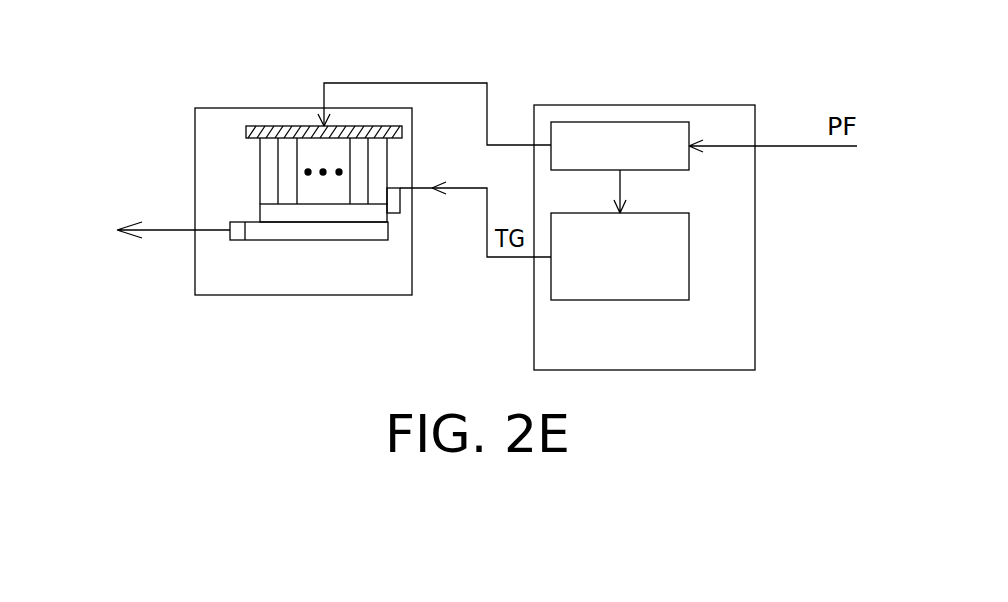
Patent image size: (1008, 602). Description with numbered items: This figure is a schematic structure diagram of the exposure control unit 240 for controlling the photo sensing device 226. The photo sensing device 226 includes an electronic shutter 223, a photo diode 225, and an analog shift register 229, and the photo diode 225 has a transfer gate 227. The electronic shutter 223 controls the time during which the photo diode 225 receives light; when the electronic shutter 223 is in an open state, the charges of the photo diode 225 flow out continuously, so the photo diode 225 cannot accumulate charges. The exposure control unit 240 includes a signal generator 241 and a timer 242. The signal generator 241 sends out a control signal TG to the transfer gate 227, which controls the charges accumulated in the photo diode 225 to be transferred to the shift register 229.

The electronic shutter 223 is at (246, 130).
The photo diode 225 is at (388, 147).
The photo sensing device 226 is at (302, 295).
The transfer gate 227 is at (260, 213).
The analog shift register 229 is at (388, 229).
The exposure control unit 240 is at (755, 211).
The signal generator 241 is at (689, 260).
The timer 242 is at (620, 122).